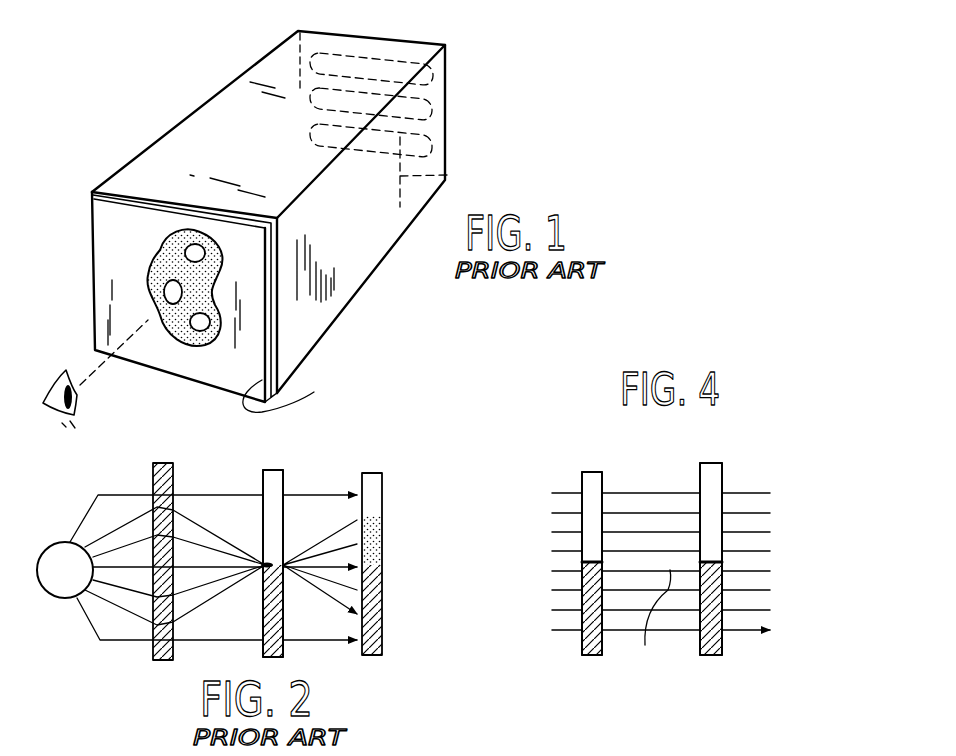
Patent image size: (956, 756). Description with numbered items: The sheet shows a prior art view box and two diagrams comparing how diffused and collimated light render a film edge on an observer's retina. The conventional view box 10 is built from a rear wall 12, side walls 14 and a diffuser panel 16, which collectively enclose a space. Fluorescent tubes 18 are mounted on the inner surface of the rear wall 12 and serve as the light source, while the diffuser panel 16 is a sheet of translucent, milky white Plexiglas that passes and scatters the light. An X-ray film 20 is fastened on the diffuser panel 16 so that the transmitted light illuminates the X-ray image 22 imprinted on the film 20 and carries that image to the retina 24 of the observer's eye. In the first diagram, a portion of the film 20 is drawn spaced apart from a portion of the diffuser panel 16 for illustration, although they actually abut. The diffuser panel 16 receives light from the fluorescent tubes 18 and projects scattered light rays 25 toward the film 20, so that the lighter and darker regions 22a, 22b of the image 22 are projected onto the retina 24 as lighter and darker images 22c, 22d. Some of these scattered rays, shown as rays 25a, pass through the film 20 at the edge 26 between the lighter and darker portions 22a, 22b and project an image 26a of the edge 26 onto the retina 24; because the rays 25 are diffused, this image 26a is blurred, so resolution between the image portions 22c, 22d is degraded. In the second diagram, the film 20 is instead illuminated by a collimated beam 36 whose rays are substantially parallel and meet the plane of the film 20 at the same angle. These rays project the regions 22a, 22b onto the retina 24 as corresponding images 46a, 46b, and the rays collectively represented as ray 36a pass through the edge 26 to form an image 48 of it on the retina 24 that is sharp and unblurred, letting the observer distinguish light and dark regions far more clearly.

In FIG. 1, the view box 10 is at (517, 155).
In FIG. 1, the rear wall 12 is at (423, 43).
In FIG. 1, the side walls 14 is at (270, 135).
In FIG. 1, the diffuser panel 16 is at (277, 352).
In FIG. 2, the diffuser panel 16 is at (150, 648).
In FIG. 1, the fluorescent tubes 18 is at (437, 152).
In FIG. 2, the fluorescent tubes 18 is at (72, 574).
In FIG. 1, the X-ray film 20 is at (310, 397).
In FIG. 2, the X-ray film 20 is at (291, 561).
In FIG. 4, the X-ray film 20 is at (583, 563).
In FIG. 1, the X-ray image 22 is at (157, 248).
In FIG. 2, the lighter region 22a is at (285, 483).
In FIG. 4, the lighter region 22a is at (595, 487).
In FIG. 2, the darker region 22b is at (292, 649).
In FIG. 4, the darker region 22b is at (590, 657).
In FIG. 2, the lighter image 22c is at (373, 482).
In FIG. 2, the darker image 22d is at (377, 643).
In FIG. 1, the retina 24 is at (73, 415).
In FIG. 2, the retina 24 is at (408, 562).
In FIG. 2, the light rays 25 is at (343, 467).
In FIG. 2, the rays 25a is at (207, 532).
In FIG. 2, the edge 26 is at (262, 578).
In FIG. 4, the edge 26 is at (588, 561).
In FIG. 2, the image of the edge 26a is at (382, 558).
In FIG. 4, the collimated beam 36 is at (563, 489).
In FIG. 4, the ray 36a is at (648, 623).
In FIG. 4, the lighter image 46a is at (757, 565).
In FIG. 4, the darker image 46b is at (710, 657).
In FIG. 4, the image of the edge 48 is at (710, 562).